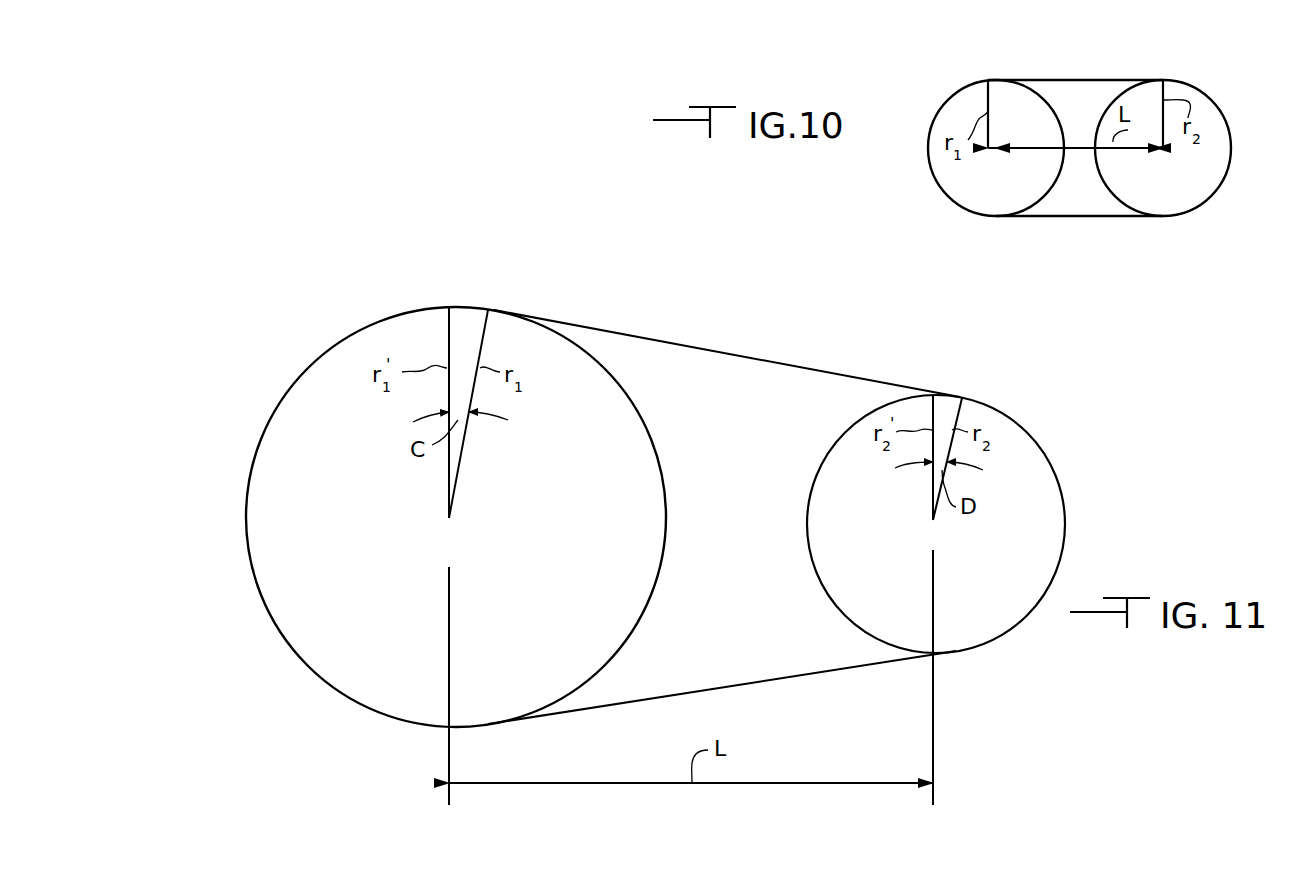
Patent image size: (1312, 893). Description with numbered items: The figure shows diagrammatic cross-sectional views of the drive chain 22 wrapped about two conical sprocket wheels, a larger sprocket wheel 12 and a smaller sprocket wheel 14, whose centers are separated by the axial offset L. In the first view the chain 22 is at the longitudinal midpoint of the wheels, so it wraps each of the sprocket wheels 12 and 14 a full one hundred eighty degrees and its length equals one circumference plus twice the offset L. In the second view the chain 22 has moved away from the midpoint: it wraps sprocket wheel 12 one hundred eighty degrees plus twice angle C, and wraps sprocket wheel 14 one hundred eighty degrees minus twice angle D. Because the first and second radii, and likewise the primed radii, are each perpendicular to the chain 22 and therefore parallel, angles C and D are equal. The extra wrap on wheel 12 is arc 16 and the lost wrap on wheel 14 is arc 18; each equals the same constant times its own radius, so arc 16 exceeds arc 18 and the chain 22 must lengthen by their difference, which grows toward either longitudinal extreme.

In FIG. 10, the sprocket wheel 12 is at (942, 112).
In FIG. 11, the sprocket wheel 12 is at (311, 363).
In FIG. 10, the sprocket wheel 14 is at (1213, 96).
In FIG. 11, the sprocket wheel 14 is at (1065, 508).
In FIG. 11, the arc 16 is at (472, 308).
In FIG. 11, the arc 18 is at (945, 394).
In FIG. 10, the drive chain 22 is at (1085, 80).
In FIG. 11, the drive chain 22 is at (723, 352).